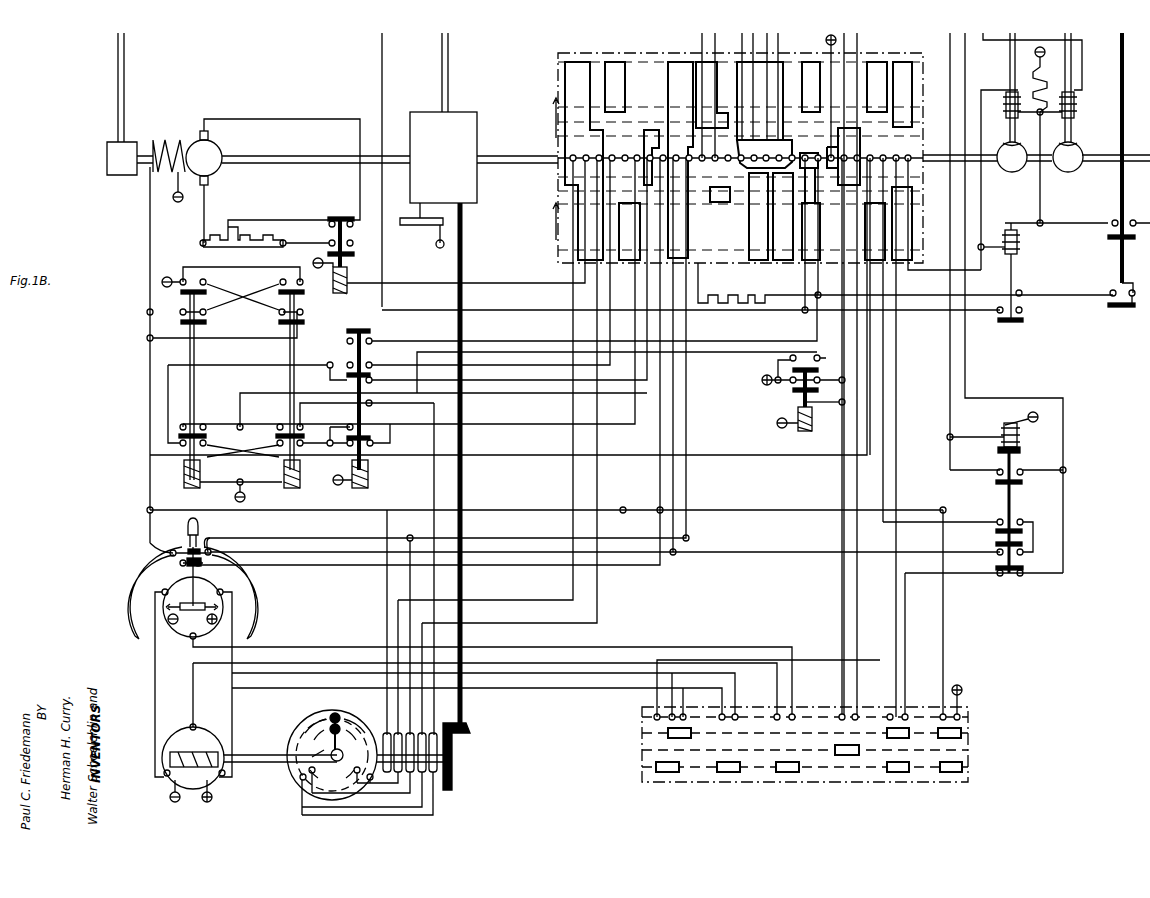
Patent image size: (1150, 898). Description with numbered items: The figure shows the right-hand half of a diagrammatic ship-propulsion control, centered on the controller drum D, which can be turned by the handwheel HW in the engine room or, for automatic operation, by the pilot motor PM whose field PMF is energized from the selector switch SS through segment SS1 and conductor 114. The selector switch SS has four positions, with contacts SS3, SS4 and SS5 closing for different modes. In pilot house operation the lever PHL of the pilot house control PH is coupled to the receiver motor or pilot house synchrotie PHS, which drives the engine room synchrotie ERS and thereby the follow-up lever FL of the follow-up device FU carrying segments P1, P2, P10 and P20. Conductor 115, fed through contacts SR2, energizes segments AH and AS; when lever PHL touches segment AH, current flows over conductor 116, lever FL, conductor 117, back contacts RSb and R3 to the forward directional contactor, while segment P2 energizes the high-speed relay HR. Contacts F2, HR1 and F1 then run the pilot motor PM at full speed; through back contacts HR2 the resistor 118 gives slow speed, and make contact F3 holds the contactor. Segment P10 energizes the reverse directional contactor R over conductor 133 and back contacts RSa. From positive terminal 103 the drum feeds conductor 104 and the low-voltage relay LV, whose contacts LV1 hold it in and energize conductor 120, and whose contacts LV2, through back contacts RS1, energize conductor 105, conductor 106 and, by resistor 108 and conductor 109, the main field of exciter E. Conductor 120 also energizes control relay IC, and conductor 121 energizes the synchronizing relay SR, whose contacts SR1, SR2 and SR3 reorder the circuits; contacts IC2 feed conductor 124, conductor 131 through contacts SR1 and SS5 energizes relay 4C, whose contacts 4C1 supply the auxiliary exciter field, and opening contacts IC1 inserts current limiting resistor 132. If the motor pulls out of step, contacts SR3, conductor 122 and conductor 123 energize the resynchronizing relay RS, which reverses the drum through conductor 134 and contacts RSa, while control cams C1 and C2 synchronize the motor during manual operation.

The positive terminal 103 is at (826, 42).
The conductor 104 is at (868, 596).
The conductor 105 is at (736, 344).
The conductor 106 is at (712, 314).
The resistor 108 is at (760, 294).
The conductor 109 is at (704, 236).
The conductor 114 is at (150, 470).
The conductor 115 is at (775, 558).
The conductor 116 is at (296, 540).
The conductor 117 is at (440, 492).
The resistor 118 is at (238, 232).
The conductor 120 is at (838, 492).
The conductor 121 is at (922, 100).
The conductor 122 is at (884, 472).
The conductor 123 is at (735, 456).
The conductor 124 is at (1062, 286).
The conductor 131 is at (967, 84).
The current limiting resistor 132 is at (1043, 82).
The conductor 133 is at (385, 590).
The conductor 134 is at (504, 430).
The pilot motor PM is at (248, 145).
The pilot motor field PMF is at (156, 143).
The handwheel HW is at (437, 378).
The high-speed relay HR is at (440, 226).
The front contacts of relay HR HR1 is at (328, 236).
The back contacts of relay HR HR2 is at (335, 217).
The contacts of forward directional contactor F1 is at (283, 280).
The contacts of forward directional contactor F2 is at (308, 314).
The contacts of forward directional contactor F3 is at (282, 426).
The reverse directional contactor R is at (233, 482).
The exciter E is at (292, 482).
The resynchronizing relay RS is at (350, 482).
The back contacts of resynchronizing relay RS1 is at (372, 330).
The contacts of resynchronizing relay RSa is at (375, 445).
The back contacts of resynchronizing relay RSb is at (372, 378).
The back contacts of reverse directional contactor R3 is at (186, 446).
The controller drum D is at (744, 155).
The low-voltage relay LV is at (793, 403).
The contacts of low-voltage relay LV1 is at (792, 394).
The contacts of low-voltage relay LV2 is at (778, 368).
The synchronizing relay SR is at (974, 505).
The back contacts of synchronizing relay SR1 is at (984, 582).
The back contacts of synchronizing relay SR2 is at (996, 556).
The make contacts of synchronizing relay SR3 is at (1020, 526).
The control cam C1 is at (1013, 172).
The control cam C2 is at (1064, 172).
The control relay IC is at (1132, 163).
The contacts of control relay IC1 is at (1108, 220).
The front contacts of control relay IC2 is at (1106, 300).
The relay 4C is at (1010, 270).
The contacts of relay 4C 4C1 is at (1026, 322).
The pilot house control PH is at (192, 559).
The pilot house lever PHL is at (200, 528).
The segment AH is at (150, 570).
The segment AS is at (252, 606).
The pilot house synchrotie PHS is at (188, 642).
The engine room synchrotie ERS is at (229, 756).
The follow-up device FU is at (350, 754).
The follow-up lever FL is at (318, 752).
The segment P1 is at (325, 714).
The segment P2 is at (315, 736).
The segment P10 is at (350, 716).
The segment P20 is at (366, 728).
The selector switch SS is at (862, 729).
The segment of selector switch SS1 is at (950, 773).
The contacts of selector switch SS3 is at (668, 773).
The contacts of selector switch SS4 is at (833, 750).
The contacts of selector switch SS5 is at (878, 773).